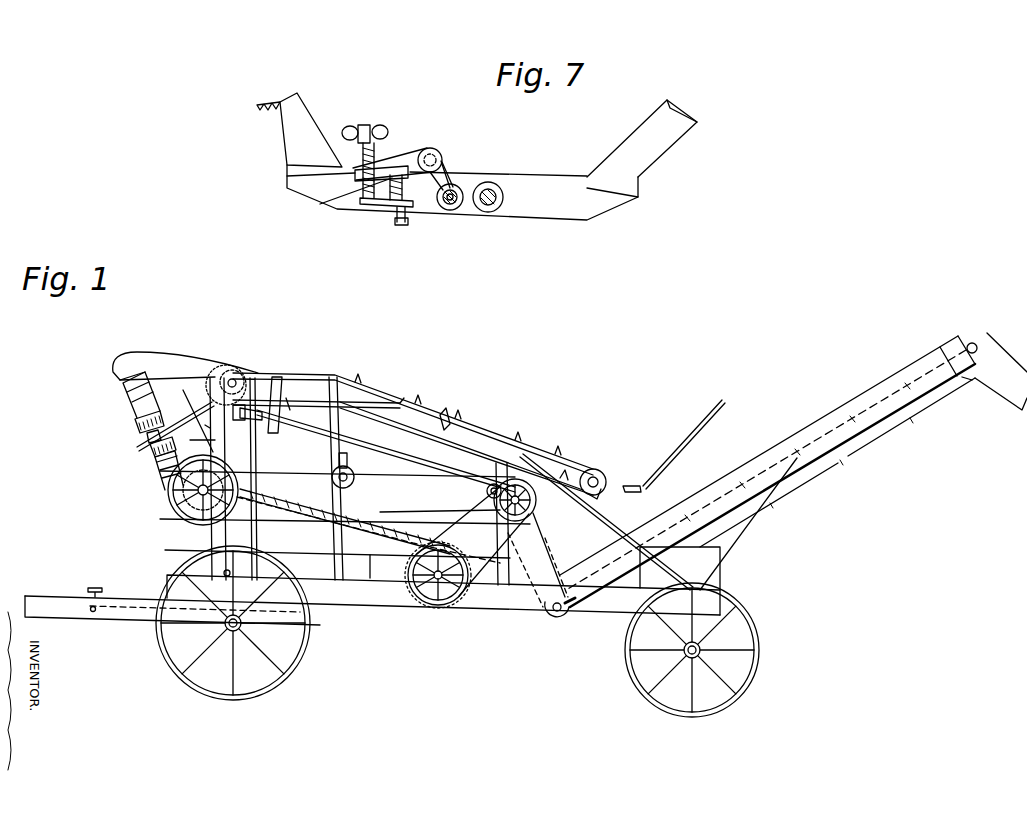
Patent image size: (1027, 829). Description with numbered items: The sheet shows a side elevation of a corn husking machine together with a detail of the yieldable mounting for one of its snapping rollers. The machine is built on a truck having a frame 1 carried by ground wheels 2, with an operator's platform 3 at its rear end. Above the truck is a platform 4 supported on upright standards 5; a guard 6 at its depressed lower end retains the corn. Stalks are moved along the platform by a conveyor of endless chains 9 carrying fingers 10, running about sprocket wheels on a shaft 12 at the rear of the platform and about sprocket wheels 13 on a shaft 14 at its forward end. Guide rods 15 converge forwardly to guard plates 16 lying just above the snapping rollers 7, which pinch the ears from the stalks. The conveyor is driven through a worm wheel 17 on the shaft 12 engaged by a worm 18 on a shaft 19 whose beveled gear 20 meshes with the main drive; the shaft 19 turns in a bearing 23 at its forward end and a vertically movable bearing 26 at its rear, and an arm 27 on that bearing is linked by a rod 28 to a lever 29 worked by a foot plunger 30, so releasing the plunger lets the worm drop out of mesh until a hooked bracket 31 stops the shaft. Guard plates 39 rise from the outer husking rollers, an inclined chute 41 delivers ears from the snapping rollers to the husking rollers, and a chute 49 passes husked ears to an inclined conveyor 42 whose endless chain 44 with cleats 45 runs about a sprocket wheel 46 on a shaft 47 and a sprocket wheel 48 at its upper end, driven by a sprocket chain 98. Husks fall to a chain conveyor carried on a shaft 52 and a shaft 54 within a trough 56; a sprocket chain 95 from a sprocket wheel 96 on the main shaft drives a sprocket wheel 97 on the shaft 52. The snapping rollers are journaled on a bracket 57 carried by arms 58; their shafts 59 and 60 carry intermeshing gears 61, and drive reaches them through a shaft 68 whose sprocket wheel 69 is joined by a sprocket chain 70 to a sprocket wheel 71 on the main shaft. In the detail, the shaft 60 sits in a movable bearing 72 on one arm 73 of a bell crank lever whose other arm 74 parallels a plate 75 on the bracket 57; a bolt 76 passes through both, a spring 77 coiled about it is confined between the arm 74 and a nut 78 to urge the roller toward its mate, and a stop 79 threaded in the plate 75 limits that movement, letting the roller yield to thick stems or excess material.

In FIG. 1, the frame 1 is at (507, 602).
In FIG. 1, the ground wheels 2 is at (304, 662).
In FIG. 1, the operator's platform 3 is at (75, 606).
In FIG. 1, the platform 4 is at (545, 449).
In FIG. 1, the upright standards 5 is at (200, 437).
In FIG. 1, the guard 6 is at (660, 478).
In FIG. 1, the snapping rollers 7 is at (130, 410).
In FIG. 1, the endless chains 9 is at (476, 418).
In FIG. 1, the fingers 10 is at (405, 392).
In FIG. 1, the shaft 12 is at (240, 374).
In FIG. 1, the sprocket wheels 13 is at (608, 476).
In FIG. 1, the shaft 14 is at (594, 469).
In FIG. 1, the rods 15 is at (212, 357).
In FIG. 1, the guard plates 16 is at (116, 375).
In FIG. 1, the worm wheel 17 is at (210, 393).
In FIG. 1, the worm 18 is at (200, 422).
In FIG. 1, the shaft 19 is at (285, 424).
In FIG. 1, the beveled gear 20 is at (492, 488).
In FIG. 1, the bearing 23 is at (485, 492).
In FIG. 1, the vertically movable bearing 26 is at (278, 395).
In FIG. 1, the arm 27 is at (244, 420).
In FIG. 1, the rod 28 is at (290, 476).
In FIG. 1, the lever 29 is at (195, 626).
In FIG. 1, the plunger 30 is at (100, 589).
In FIG. 1, the hooked shaped bracket 31 is at (288, 400).
In FIG. 1, the plates 39 is at (356, 492).
In FIG. 1, the inclined plate or chute 41 is at (200, 412).
In FIG. 1, the conveyor 42 is at (890, 385).
In FIG. 1, the endless chain 44 is at (795, 448).
In FIG. 1, the cleats 45 is at (862, 438).
In FIG. 1, the sprocket wheel 46 is at (572, 610).
In FIG. 1, the shaft 47 is at (555, 614).
In FIG. 1, the sprocket wheel 48 is at (975, 343).
In FIG. 1, the chute 49 is at (585, 524).
In FIG. 1, the shaft 52 is at (443, 602).
In FIG. 1, the shaft 54 is at (232, 572).
In FIG. 1, the trough like structure 56 is at (375, 600).
In FIG. 7, the supporting frame or bracket 57 is at (577, 205).
In FIG. 1, the supporting frame or bracket 57 is at (138, 426).
In FIG. 7, the arms 58 is at (660, 140).
In FIG. 1, the arms 58 is at (152, 450).
In FIG. 7, the shaft 59 is at (490, 212).
In FIG. 7, the shaft 60 is at (458, 188).
In FIG. 1, the shaft 60 is at (160, 458).
In FIG. 1, the intermeshing gears 61 is at (170, 470).
In FIG. 1, the shaft 68 is at (178, 506).
In FIG. 1, the sprocket wheel 69 is at (188, 504).
In FIG. 1, the sprocket chain 70 is at (290, 512).
In FIG. 1, the sprocket wheel 71 is at (480, 511).
In FIG. 7, the movable bearing 72 is at (454, 190).
In FIG. 7, the arm 73 is at (450, 180).
In FIG. 7, the arm 74 is at (396, 165).
In FIG. 7, the projection or plate 75 is at (390, 208).
In FIG. 7, the bolt 76 is at (368, 185).
In FIG. 7, the spring 77 is at (352, 150).
In FIG. 7, the nut 78 is at (372, 125).
In FIG. 7, the stop 79 is at (401, 218).
In FIG. 1, the sprocket chain 95 is at (460, 553).
In FIG. 1, the sprocket wheel 96 is at (540, 553).
In FIG. 1, the sprocket wheel 97 is at (425, 597).
In FIG. 1, the sprocket chain 98 is at (558, 553).